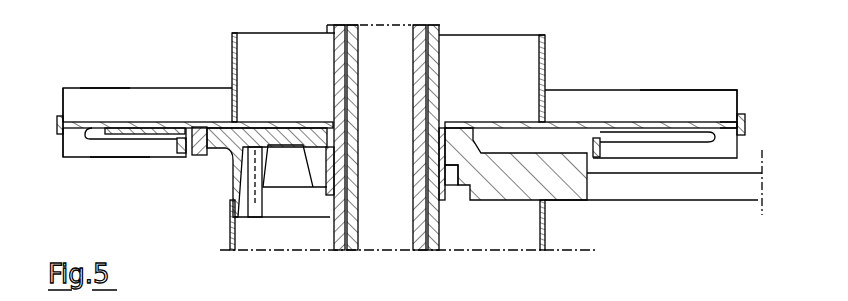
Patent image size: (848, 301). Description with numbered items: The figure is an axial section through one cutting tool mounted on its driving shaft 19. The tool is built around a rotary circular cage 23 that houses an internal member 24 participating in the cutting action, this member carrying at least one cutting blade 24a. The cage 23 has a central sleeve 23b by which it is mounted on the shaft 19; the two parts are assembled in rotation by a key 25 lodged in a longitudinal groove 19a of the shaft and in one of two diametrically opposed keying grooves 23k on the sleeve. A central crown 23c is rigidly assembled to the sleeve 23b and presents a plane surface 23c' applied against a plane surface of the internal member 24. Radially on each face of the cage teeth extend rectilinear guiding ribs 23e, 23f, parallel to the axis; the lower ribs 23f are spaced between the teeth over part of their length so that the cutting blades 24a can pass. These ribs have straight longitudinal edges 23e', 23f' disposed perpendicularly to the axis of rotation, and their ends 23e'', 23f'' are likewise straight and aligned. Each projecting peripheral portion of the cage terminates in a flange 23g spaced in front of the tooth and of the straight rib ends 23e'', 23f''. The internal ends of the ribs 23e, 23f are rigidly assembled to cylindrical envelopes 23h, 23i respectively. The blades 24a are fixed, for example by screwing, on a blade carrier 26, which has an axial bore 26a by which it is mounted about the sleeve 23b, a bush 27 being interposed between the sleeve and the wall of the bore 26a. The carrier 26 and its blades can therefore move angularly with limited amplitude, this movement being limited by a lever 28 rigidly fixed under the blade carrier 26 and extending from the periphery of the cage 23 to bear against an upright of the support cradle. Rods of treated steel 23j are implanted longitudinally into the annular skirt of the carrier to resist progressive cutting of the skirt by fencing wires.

The driving shaft 19 is at (422, 58).
The longitudinal groove 19a is at (327, 182).
The rotary circular cage 23 is at (653, 68).
The central sleeve 23b is at (436, 120).
The central crown 23c is at (758, 107).
The plane surface 23c' is at (702, 79).
The guiding rib 23e is at (147, 76).
The longitudinal edge 23e' is at (57, 69).
The rib end 23e'' is at (110, 52).
The lower guiding rib 23f is at (124, 176).
The longitudinal edge 23f' is at (42, 176).
The rib end 23f'' is at (120, 194).
The flange 23g is at (54, 150).
The cylindrical envelope 23h is at (232, 70).
The cylindrical envelope 23i is at (178, 157).
The treated steel rod 23j is at (231, 181).
The keying groove 23k is at (447, 163).
The internal member 24 is at (226, 176).
The cutting blade 24a is at (134, 127).
The key 25 is at (264, 181).
The blade carrier 26 is at (570, 207).
The axial bore 26a is at (454, 183).
The bush 27 is at (457, 190).
The lever 28 is at (679, 190).